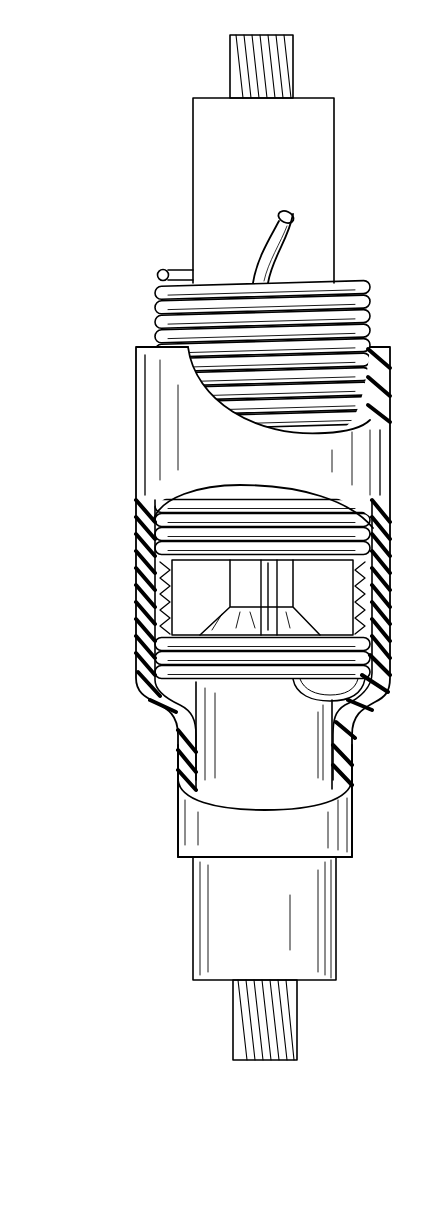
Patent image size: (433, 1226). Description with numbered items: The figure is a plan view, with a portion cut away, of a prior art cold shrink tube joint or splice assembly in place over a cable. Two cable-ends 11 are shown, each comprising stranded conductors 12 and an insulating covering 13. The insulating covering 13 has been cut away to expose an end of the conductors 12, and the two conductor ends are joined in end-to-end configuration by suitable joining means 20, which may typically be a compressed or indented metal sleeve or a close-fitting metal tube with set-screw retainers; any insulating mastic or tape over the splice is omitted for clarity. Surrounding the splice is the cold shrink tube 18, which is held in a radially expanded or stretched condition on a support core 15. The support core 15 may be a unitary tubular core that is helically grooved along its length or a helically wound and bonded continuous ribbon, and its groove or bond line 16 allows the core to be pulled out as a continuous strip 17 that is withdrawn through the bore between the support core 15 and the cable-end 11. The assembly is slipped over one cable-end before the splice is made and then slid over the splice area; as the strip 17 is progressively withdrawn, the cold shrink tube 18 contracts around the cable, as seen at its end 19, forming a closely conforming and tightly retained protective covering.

The cable-end 11 is at (172, 165).
The stranded conductors 12 is at (293, 70).
The insulating covering 13 is at (334, 192).
The support core 15 is at (155, 272).
The groove or bond line 16 is at (155, 327).
The continuous strip 17 is at (268, 232).
The cold shrink tube 18 is at (272, 467).
The end 19 is at (353, 797).
The joining means 20 is at (242, 587).